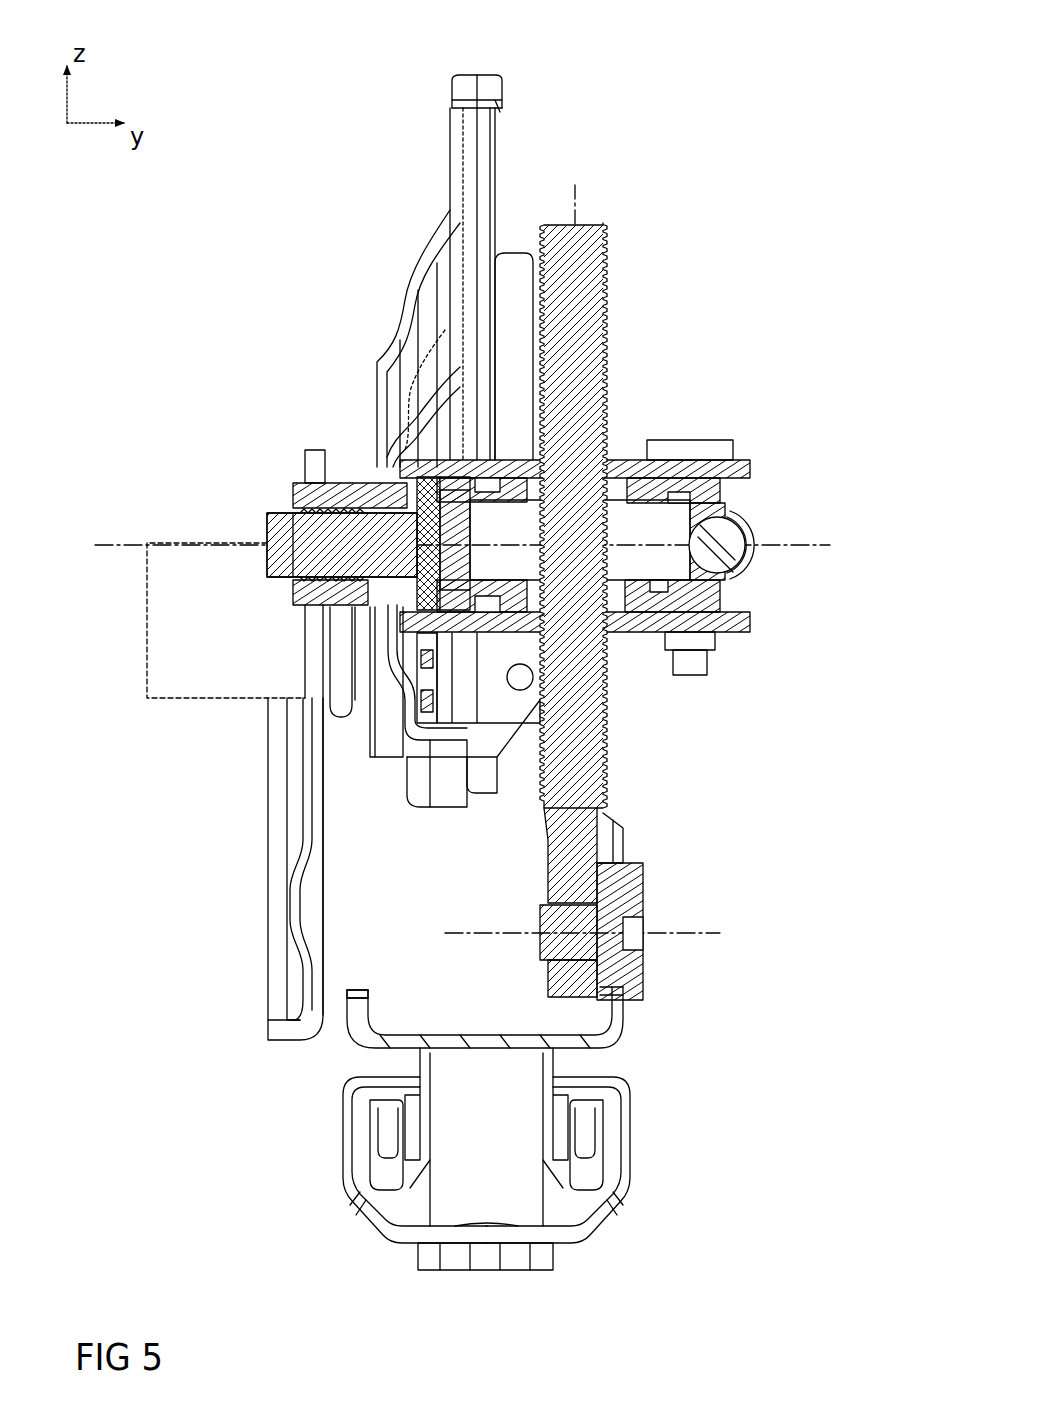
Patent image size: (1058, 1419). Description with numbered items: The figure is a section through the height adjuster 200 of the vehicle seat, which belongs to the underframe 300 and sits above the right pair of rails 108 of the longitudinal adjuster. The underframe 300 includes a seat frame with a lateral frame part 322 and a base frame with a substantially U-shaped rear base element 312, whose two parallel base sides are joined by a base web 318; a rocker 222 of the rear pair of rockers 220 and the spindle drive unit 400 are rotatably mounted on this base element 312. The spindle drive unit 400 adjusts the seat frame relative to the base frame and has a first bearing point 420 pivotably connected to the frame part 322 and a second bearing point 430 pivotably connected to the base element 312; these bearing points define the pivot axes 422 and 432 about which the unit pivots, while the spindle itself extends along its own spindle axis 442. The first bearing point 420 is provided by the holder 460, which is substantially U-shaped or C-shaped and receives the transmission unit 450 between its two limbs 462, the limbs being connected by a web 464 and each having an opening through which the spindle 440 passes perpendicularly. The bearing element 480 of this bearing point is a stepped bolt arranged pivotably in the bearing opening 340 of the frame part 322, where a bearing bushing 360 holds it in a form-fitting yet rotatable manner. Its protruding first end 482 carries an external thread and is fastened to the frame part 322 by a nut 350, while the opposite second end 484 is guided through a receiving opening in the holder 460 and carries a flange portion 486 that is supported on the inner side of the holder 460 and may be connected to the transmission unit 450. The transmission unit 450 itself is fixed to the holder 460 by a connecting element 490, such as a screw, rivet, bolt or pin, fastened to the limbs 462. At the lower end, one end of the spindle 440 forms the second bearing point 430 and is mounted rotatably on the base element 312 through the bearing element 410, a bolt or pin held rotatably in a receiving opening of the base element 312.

The pair of rails 108 is at (652, 1216).
The height adjuster 200 is at (760, 88).
The pair of rockers 220 is at (189, 869).
The rocker 222 is at (300, 905).
The underframe 300 is at (386, 395).
The rear base element 312 is at (465, 1073).
The base web 318 is at (350, 1033).
The lateral frame part 322 is at (507, 103).
The bearing opening 340 is at (437, 440).
The nut 350 is at (296, 489).
The bearing bushing 360 is at (348, 456).
The spindle drive unit 400 is at (670, 128).
The bearing element 410 is at (648, 885).
The first bearing point 420 is at (346, 663).
The pivot axis 422 is at (820, 538).
The second bearing point 430 is at (665, 828).
The pivot axis 432 is at (718, 936).
The spindle 440 is at (610, 258).
The spindle axis 442 is at (575, 186).
The transmission unit 450 is at (722, 597).
The holder 460 is at (702, 466).
The limb 462 is at (640, 458).
The web 464 is at (388, 345).
The bearing element 480 is at (264, 572).
The protruding first end 482 is at (290, 516).
The second end 484 is at (332, 700).
The flange portion 486 is at (399, 454).
The connecting element 490 is at (727, 666).